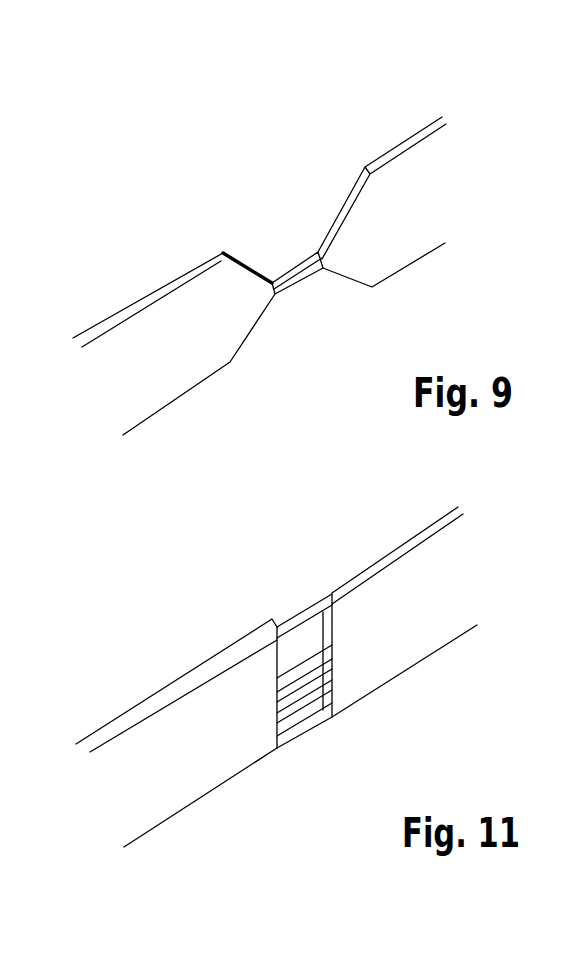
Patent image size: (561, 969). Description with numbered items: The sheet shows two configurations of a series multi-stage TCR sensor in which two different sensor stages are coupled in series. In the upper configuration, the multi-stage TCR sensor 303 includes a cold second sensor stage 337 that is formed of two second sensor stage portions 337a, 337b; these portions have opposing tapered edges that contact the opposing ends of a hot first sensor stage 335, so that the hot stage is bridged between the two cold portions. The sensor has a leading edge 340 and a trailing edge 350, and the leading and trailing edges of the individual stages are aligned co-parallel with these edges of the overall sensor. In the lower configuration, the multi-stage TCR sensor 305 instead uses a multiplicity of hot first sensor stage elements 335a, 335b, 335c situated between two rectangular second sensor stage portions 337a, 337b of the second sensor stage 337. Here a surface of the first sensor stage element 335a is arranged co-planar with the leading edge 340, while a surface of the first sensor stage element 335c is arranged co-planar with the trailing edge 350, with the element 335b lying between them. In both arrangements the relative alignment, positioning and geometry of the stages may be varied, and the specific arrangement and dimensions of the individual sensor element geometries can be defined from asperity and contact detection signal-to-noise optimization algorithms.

In FIG. 9, the multi-stage TCR sensor 303 is at (265, 172).
In FIG. 11, the multi-stage TCR sensor 305 is at (212, 545).
In FIG. 9, the first sensor stage 335 is at (292, 291).
In FIG. 11, the first sensor stage 335 is at (304, 671).
In FIG. 11, the first sensor stage element 335a is at (277, 726).
In FIG. 11, the first sensor stage element 335b is at (327, 646).
In FIG. 11, the first sensor stage element 335c is at (292, 618).
In FIG. 9, the second sensor stage 337 is at (237, 210).
In FIG. 11, the second sensor stage 337 is at (361, 742).
In FIG. 9, the second sensor stage portion 337a is at (217, 354).
In FIG. 11, the second sensor stage portion 337a is at (221, 762).
In FIG. 9, the second sensor stage portion 337b is at (426, 244).
In FIG. 11, the second sensor stage portion 337b is at (426, 642).
In FIG. 9, the leading edge 340 is at (377, 315).
In FIG. 11, the leading edge 340 is at (410, 711).
In FIG. 9, the trailing edge 350 is at (396, 116).
In FIG. 11, the trailing edge 350 is at (343, 550).